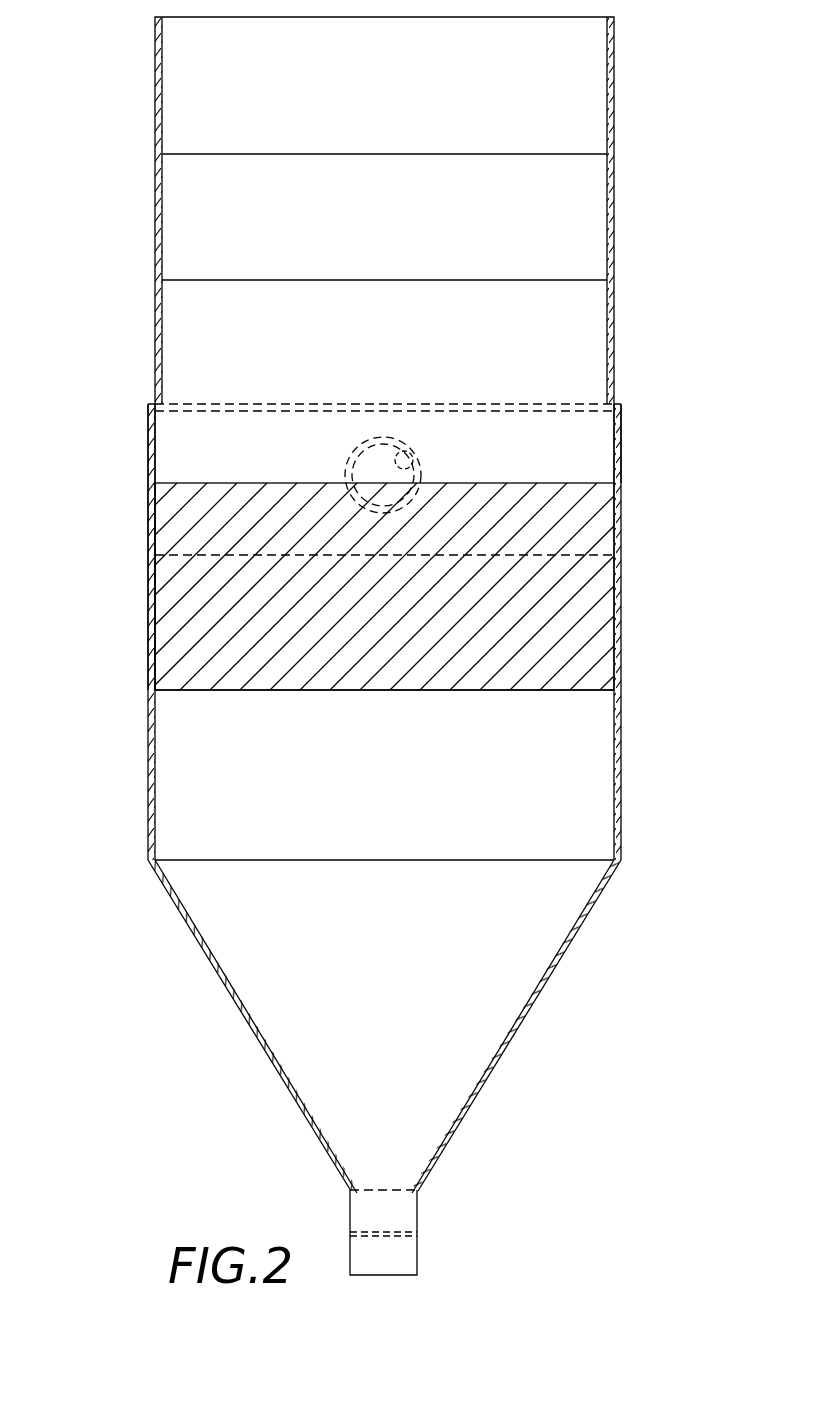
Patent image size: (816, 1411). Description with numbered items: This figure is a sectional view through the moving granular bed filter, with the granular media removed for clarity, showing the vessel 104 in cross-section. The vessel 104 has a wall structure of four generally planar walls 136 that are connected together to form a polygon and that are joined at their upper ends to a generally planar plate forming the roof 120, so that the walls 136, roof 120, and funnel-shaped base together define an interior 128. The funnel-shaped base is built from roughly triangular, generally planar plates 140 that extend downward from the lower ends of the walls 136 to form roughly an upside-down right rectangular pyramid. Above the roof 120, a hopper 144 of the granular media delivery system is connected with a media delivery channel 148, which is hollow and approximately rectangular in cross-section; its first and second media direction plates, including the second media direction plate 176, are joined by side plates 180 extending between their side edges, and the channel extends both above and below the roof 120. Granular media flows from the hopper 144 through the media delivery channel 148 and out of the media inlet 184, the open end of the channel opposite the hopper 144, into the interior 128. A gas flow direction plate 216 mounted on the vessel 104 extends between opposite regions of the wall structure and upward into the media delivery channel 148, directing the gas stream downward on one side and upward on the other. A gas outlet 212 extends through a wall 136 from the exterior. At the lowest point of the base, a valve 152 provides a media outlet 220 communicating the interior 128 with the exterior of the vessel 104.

The vessel 104 is at (128, 653).
The roof 120 is at (553, 404).
The interior 128 is at (393, 791).
The walls 136 is at (148, 712).
The plates 140 is at (240, 1013).
The hopper 144 is at (613, 102).
The media delivery channel 148 is at (634, 275).
The valve 152 is at (398, 1280).
The second media direction plate 176 is at (573, 560).
The side plates 180 is at (155, 364).
The media inlet 184 is at (193, 543).
The gas outlet 212 is at (420, 468).
The gas flow direction plate 216 is at (548, 692).
The media outlet 220 is at (381, 1189).